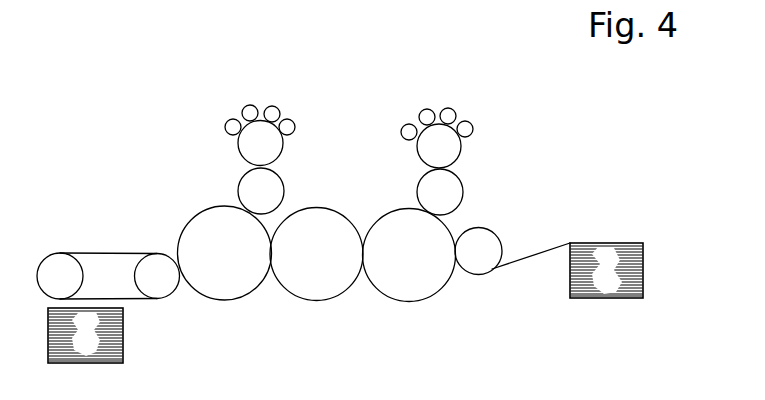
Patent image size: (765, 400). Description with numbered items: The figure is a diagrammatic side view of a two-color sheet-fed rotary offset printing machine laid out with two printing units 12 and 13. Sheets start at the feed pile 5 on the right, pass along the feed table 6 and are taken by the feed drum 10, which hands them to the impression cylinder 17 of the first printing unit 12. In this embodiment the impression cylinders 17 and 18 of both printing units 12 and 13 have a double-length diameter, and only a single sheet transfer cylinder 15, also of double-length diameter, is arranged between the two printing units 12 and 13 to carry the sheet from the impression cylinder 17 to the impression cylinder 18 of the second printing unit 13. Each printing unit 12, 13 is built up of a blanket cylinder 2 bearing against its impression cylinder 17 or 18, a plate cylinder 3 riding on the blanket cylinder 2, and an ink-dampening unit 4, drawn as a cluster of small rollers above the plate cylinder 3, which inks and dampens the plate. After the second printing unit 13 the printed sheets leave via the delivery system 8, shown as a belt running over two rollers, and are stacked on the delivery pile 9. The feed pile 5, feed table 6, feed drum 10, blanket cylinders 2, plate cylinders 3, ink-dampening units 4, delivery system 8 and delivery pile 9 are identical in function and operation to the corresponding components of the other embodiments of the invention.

The blanket cylinder 2 is at (253, 188).
The plate cylinder 3 is at (247, 143).
The ink-dampening unit 4 is at (268, 112).
The feed pile 5 is at (605, 255).
The feed table 6 is at (538, 253).
The delivery system 8 is at (100, 265).
The delivery pile 9 is at (92, 337).
The feed drum 10 is at (485, 237).
The printing unit 12 is at (477, 169).
The printing unit 13 is at (290, 170).
The sheet transfer cylinder 15 is at (321, 287).
The impression cylinder 17 is at (415, 287).
The impression cylinder 18 is at (230, 280).